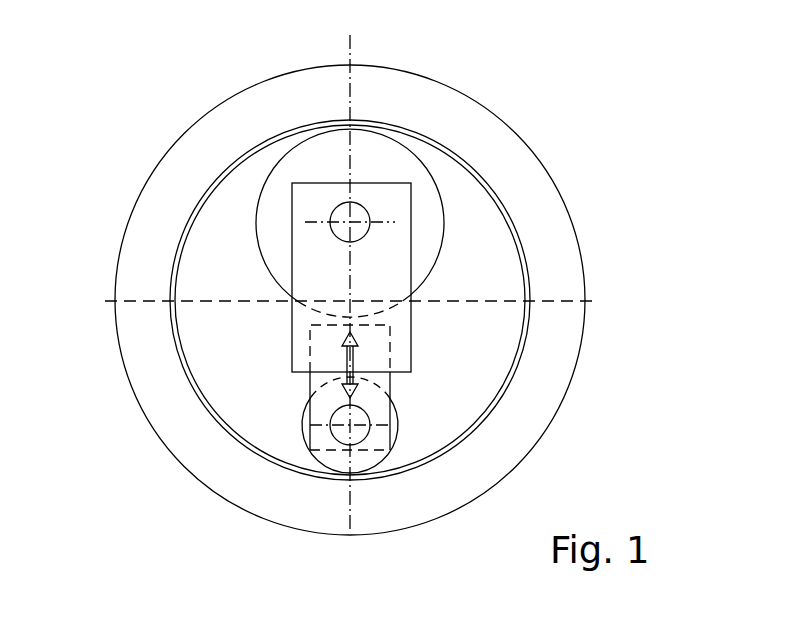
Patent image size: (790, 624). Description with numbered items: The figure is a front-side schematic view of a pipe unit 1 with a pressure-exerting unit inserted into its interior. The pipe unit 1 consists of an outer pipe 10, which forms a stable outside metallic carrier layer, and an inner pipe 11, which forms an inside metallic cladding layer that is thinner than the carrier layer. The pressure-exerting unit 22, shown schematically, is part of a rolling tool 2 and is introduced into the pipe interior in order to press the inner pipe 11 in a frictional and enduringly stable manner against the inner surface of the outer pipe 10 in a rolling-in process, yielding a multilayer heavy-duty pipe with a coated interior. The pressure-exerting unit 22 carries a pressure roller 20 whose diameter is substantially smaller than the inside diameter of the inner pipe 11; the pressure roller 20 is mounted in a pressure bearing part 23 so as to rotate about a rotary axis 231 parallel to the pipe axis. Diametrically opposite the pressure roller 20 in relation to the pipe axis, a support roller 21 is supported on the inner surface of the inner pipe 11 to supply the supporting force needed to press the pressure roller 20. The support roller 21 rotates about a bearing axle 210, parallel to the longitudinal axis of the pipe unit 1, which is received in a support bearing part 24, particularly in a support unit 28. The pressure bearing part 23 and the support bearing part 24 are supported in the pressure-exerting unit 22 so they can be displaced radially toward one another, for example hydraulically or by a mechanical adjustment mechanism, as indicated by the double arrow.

The pipe unit 1 is at (552, 100).
The outer pipe 10 is at (425, 100).
The inner pipe 11 is at (505, 210).
The rolling tool 2 is at (463, 348).
The pressure roller 20 is at (443, 230).
The support roller 21 is at (368, 460).
The bearing axle 210 is at (340, 433).
The pressure-exerting unit 22 is at (412, 325).
The pressure bearing part 23 is at (292, 330).
The rotary axis 231 is at (340, 215).
The support bearing part 24 is at (310, 382).
The support unit 28 is at (280, 438).